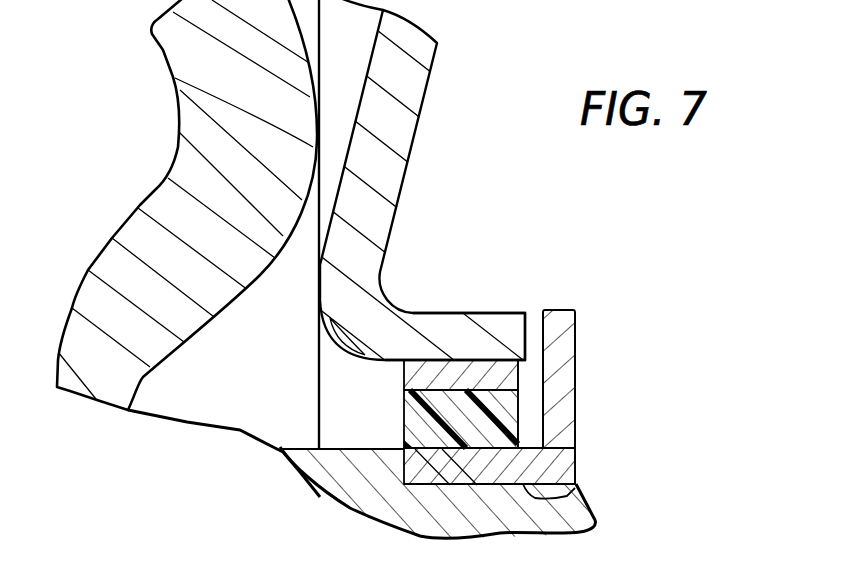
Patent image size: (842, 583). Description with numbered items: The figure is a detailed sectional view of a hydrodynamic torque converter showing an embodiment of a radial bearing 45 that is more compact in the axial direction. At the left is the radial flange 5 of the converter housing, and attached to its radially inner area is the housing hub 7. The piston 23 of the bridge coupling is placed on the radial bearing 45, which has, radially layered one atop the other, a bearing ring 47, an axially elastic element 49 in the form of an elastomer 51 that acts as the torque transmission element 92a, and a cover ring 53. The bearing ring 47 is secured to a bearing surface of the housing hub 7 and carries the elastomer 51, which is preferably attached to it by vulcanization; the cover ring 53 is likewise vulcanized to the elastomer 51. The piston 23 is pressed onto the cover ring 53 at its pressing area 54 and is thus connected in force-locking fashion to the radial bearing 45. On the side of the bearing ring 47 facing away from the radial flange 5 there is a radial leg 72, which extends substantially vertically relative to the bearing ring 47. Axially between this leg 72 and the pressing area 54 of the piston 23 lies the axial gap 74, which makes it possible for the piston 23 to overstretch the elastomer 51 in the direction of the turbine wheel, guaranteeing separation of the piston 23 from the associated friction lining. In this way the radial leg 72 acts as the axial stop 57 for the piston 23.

The radial flange 5 is at (185, 138).
The housing hub 7 is at (357, 460).
The piston 23 is at (417, 104).
The radial bearing 45 is at (577, 412).
The bearing ring 47 is at (574, 488).
The axially elastic element 49 is at (510, 402).
The elastomer 51 is at (507, 418).
The cover ring 53 is at (480, 370).
The pressing area 54 is at (453, 316).
The axial stop 57 is at (543, 441).
The radial leg 72 is at (575, 318).
The axial gap 74 is at (538, 312).
The torque transmission element 92a is at (403, 432).